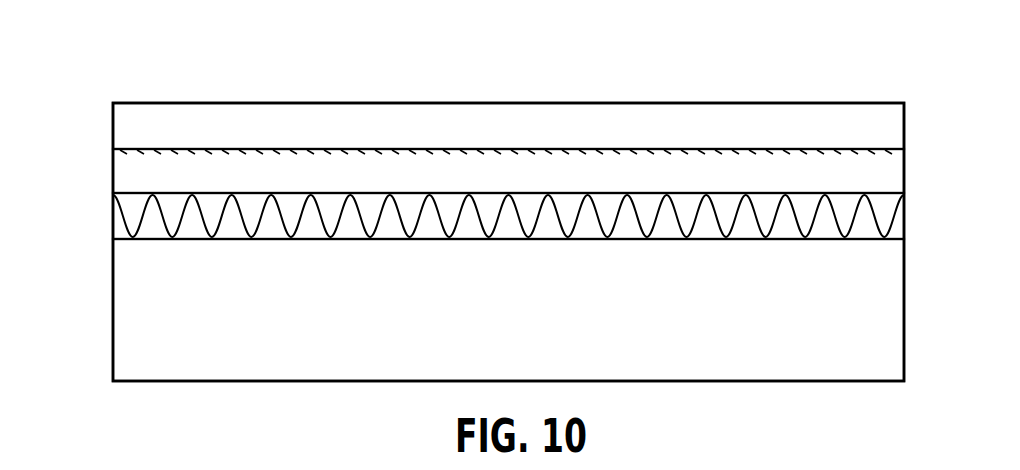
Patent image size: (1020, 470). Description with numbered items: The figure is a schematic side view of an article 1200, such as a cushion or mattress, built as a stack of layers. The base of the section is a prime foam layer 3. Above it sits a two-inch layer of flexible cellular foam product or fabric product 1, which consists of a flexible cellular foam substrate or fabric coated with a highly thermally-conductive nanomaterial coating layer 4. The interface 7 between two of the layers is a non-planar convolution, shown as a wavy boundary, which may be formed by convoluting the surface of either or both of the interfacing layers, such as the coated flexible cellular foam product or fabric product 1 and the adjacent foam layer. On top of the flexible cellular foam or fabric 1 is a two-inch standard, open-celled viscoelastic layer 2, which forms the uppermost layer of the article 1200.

The article 1200 is at (126, 74).
The open-celled viscoelastic layer 2 is at (905, 127).
The highly thermally-conductive nanomaterial coating layer 4 is at (112, 149).
The flexible cellular foam product or fabric product 1 is at (905, 173).
The interface 7 is at (905, 223).
The prime foam layer 3 is at (905, 312).